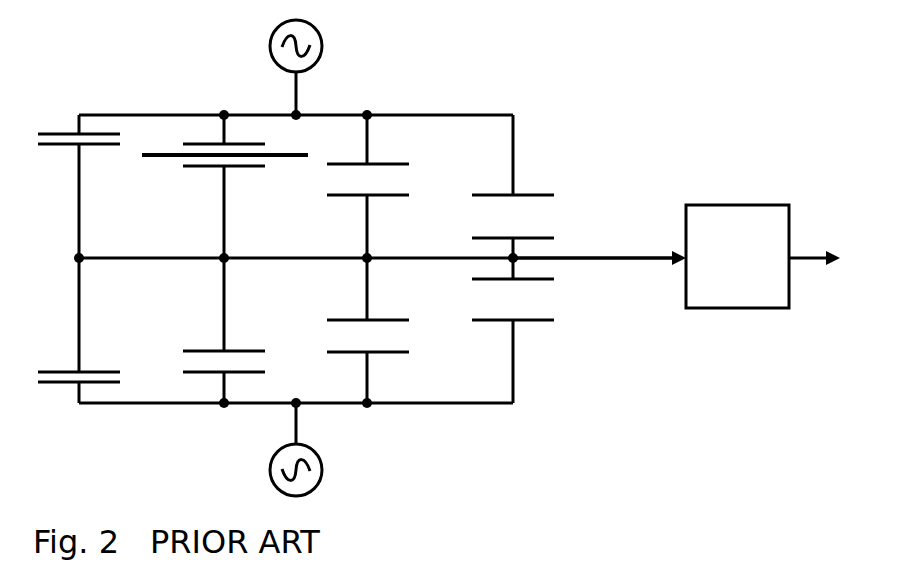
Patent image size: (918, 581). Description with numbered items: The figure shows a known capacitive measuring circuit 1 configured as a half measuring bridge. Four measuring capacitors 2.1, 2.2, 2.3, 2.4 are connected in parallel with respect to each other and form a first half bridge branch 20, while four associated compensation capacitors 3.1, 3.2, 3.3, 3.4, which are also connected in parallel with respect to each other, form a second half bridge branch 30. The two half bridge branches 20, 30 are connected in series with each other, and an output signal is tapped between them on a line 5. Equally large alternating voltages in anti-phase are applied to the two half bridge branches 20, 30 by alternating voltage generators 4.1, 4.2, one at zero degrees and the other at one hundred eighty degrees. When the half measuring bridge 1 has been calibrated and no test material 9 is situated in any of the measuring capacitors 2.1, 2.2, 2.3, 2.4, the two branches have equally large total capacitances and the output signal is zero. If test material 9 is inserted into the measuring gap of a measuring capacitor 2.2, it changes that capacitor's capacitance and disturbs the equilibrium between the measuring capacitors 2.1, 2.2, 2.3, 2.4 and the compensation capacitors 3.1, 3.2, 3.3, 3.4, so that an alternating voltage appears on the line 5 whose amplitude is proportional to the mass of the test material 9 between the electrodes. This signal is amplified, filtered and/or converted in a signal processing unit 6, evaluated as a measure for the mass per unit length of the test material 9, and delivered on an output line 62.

The measuring circuit 1 is at (78, 62).
The half bridge branch 20 is at (448, 102).
The half bridge branch 30 is at (448, 415).
The measuring capacitor 2.1 is at (98, 145).
The measuring capacitor 2.2 is at (243, 167).
The measuring capacitor 2.3 is at (390, 198).
The measuring capacitor 2.4 is at (530, 194).
The compensation capacitor 3.1 is at (100, 371).
The compensation capacitor 3.2 is at (243, 350).
The compensation capacitor 3.3 is at (390, 319).
The compensation capacitor 3.4 is at (533, 321).
The test material 9 is at (157, 158).
The alternating voltage generator 4.1 is at (322, 45).
The alternating voltage generator 4.2 is at (322, 468).
The line 5 is at (613, 260).
The signal processing unit 6 is at (762, 204).
The output line 62 is at (815, 260).